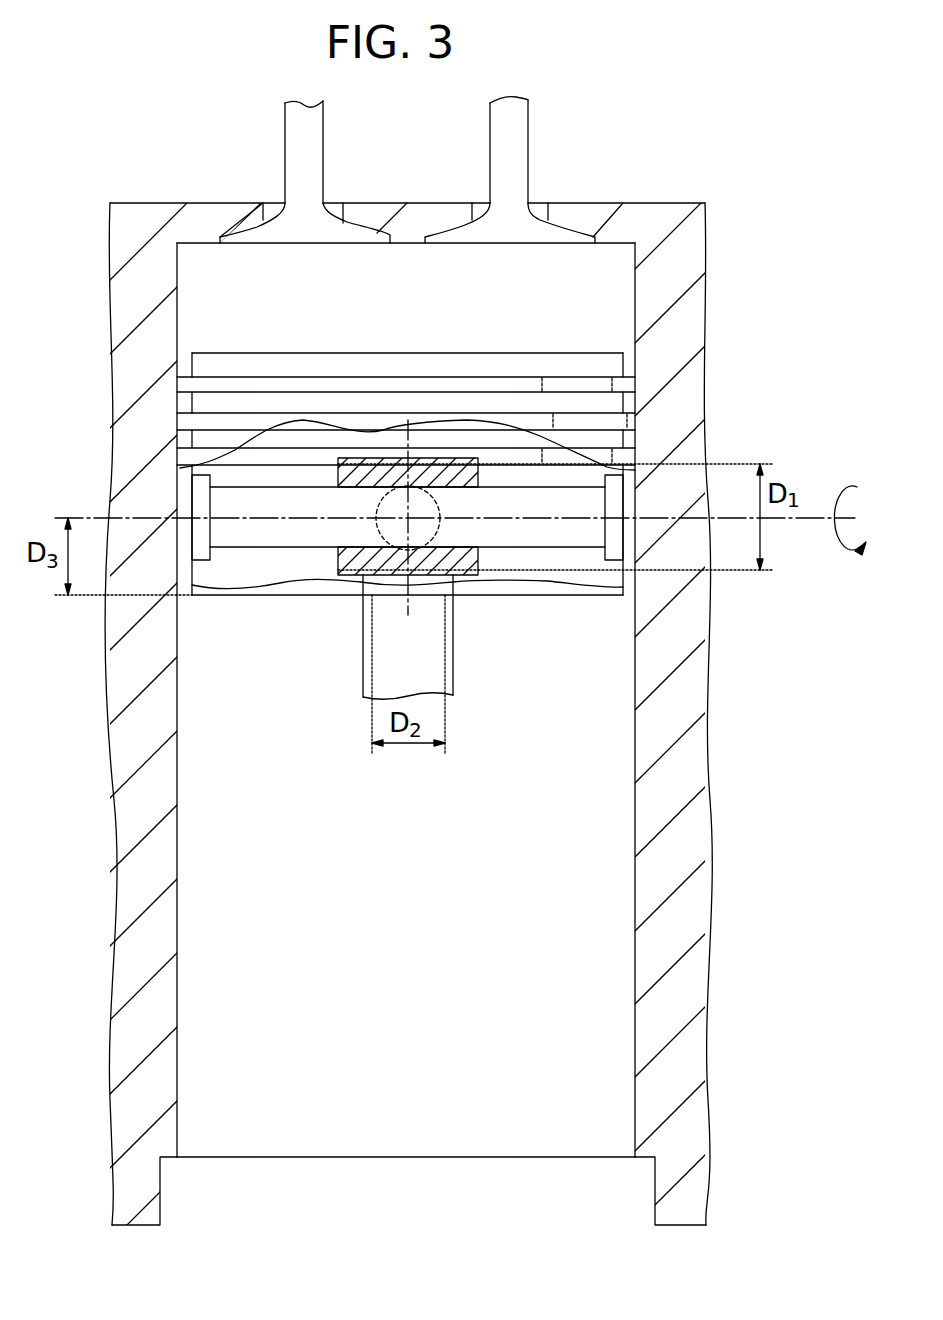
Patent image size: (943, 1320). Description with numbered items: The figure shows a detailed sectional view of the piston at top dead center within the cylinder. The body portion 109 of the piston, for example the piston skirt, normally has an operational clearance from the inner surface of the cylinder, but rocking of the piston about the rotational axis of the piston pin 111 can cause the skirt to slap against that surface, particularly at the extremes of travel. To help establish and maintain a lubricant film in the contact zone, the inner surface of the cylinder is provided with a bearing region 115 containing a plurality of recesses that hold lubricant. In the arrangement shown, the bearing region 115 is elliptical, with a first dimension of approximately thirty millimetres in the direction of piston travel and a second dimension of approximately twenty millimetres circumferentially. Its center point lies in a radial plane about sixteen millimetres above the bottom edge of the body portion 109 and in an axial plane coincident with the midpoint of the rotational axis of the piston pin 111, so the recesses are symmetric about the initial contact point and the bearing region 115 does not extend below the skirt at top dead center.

The body portion of the piston 109 is at (303, 600).
The piston pin 111 is at (252, 548).
The bearing region 115 is at (455, 523).